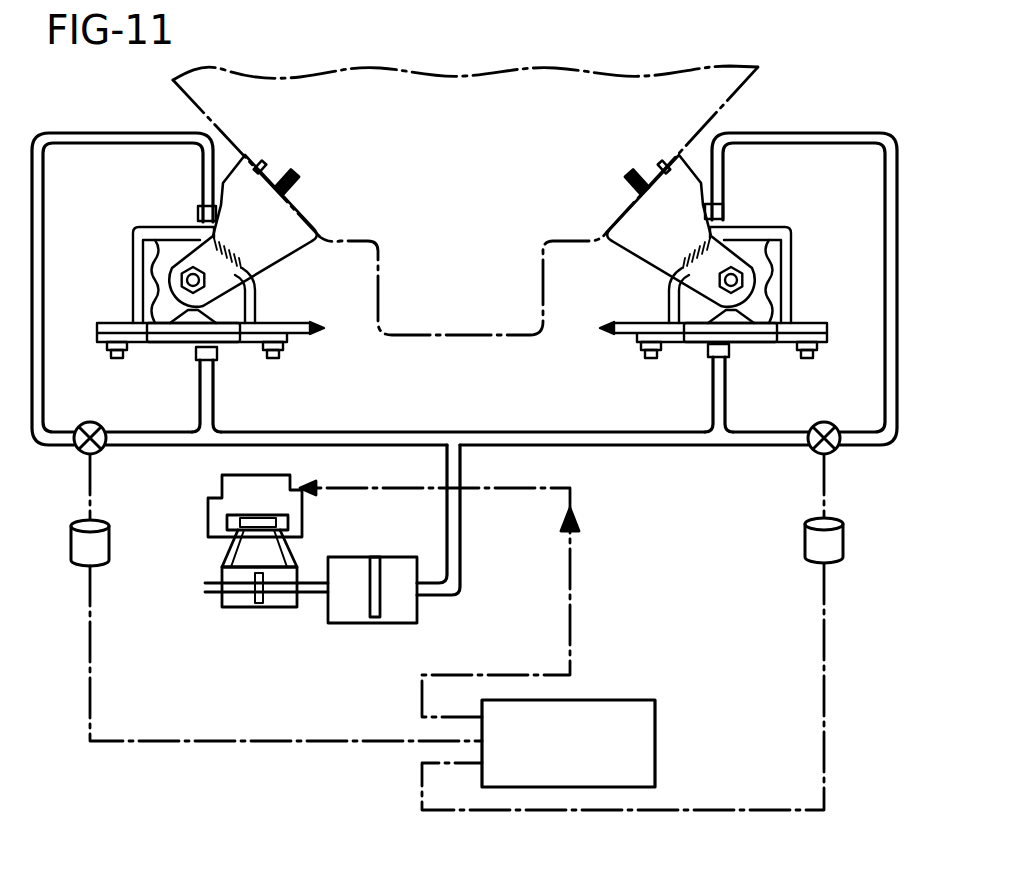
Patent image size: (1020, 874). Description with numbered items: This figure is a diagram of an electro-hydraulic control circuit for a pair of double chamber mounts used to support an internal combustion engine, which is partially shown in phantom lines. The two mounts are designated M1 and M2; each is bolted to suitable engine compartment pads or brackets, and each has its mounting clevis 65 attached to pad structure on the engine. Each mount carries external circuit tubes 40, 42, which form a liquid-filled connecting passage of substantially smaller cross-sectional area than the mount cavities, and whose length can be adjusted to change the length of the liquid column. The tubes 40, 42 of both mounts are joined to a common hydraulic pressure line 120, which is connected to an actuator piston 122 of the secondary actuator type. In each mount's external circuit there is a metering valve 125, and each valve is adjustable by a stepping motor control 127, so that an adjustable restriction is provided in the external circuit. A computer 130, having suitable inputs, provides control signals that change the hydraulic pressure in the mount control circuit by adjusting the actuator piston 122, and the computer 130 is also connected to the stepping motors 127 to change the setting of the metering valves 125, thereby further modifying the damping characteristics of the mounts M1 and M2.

The external pipe 40 is at (100, 143).
The external pipe 42 is at (214, 380).
The clevis 65 is at (281, 242).
The common hydraulic pressure line 120 is at (556, 431).
The actuator piston 122 is at (384, 548).
The metering valve 125 is at (98, 456).
The stepping motor control 127 is at (110, 545).
The computer 130 is at (656, 728).
The double chamber mount M1 is at (173, 349).
The double chamber mount M2 is at (751, 349).